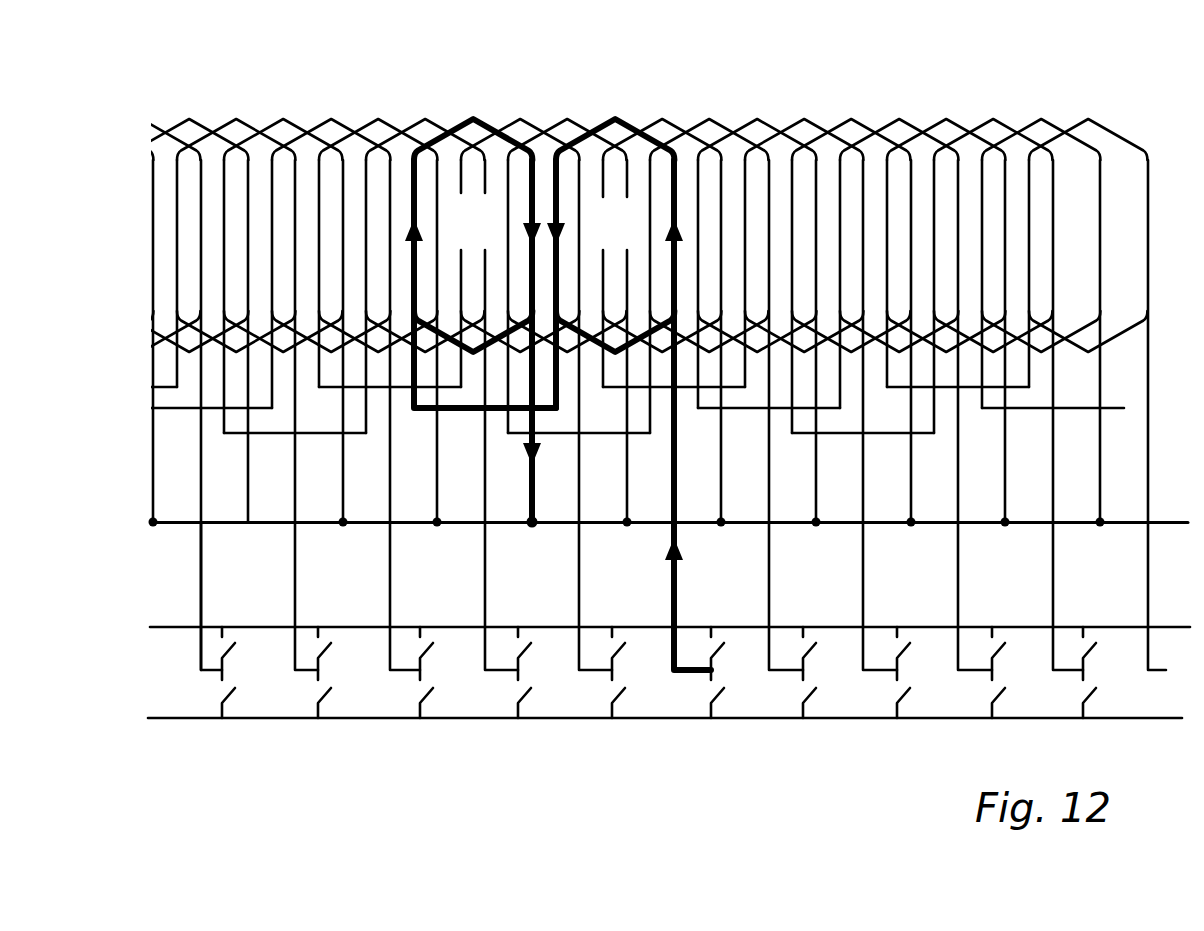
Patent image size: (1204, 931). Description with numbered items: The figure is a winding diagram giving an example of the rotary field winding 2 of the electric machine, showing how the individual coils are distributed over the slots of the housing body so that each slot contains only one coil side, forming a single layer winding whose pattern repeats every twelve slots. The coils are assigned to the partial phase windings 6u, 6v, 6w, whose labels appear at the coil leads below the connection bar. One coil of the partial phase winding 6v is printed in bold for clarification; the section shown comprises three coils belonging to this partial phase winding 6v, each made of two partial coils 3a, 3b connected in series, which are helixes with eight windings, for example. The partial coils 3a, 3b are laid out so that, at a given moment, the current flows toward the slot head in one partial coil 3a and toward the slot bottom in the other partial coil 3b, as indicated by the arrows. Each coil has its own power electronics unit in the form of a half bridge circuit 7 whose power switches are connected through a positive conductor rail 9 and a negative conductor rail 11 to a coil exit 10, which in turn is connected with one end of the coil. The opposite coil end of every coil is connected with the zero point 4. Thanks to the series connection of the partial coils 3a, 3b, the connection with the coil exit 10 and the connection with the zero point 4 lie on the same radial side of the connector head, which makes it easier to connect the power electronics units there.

The winding 2 is at (972, 56).
The partial coil 3a is at (628, 250).
The partial coil 3b is at (487, 250).
The zero point 4 is at (513, 523).
The partial phase winding 6u is at (740, 596).
The partial phase winding 6v is at (695, 596).
The partial phase winding 6w is at (648, 596).
The half bridge circuit 7 is at (339, 707).
The positive conductor rail 9 is at (160, 720).
The coil exit 10 is at (198, 592).
The negative conductor rail 11 is at (160, 628).